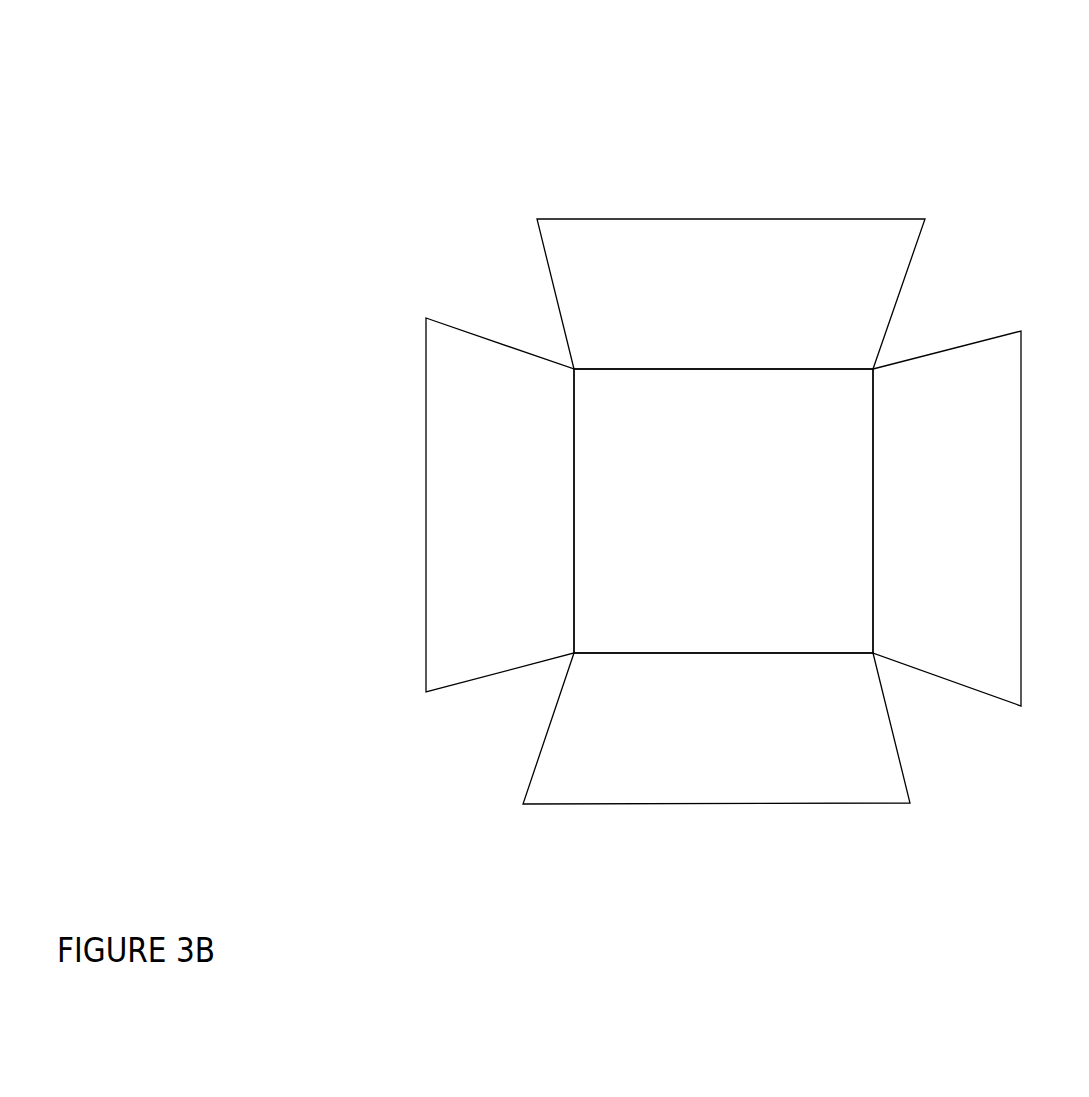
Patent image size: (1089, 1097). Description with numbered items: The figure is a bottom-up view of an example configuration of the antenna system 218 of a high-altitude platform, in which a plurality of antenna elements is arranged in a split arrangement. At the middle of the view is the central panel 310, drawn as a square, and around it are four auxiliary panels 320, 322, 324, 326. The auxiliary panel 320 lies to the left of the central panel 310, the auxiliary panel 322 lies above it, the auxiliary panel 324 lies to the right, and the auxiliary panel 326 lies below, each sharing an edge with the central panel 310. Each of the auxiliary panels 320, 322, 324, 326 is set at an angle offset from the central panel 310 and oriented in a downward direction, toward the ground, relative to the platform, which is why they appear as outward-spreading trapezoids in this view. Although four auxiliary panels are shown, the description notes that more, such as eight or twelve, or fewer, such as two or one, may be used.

The antenna system 218 is at (916, 140).
The central panel 310 is at (745, 524).
The auxiliary panel 320 is at (515, 524).
The auxiliary panel 322 is at (750, 306).
The auxiliary panel 324 is at (947, 530).
The auxiliary panel 326 is at (732, 740).